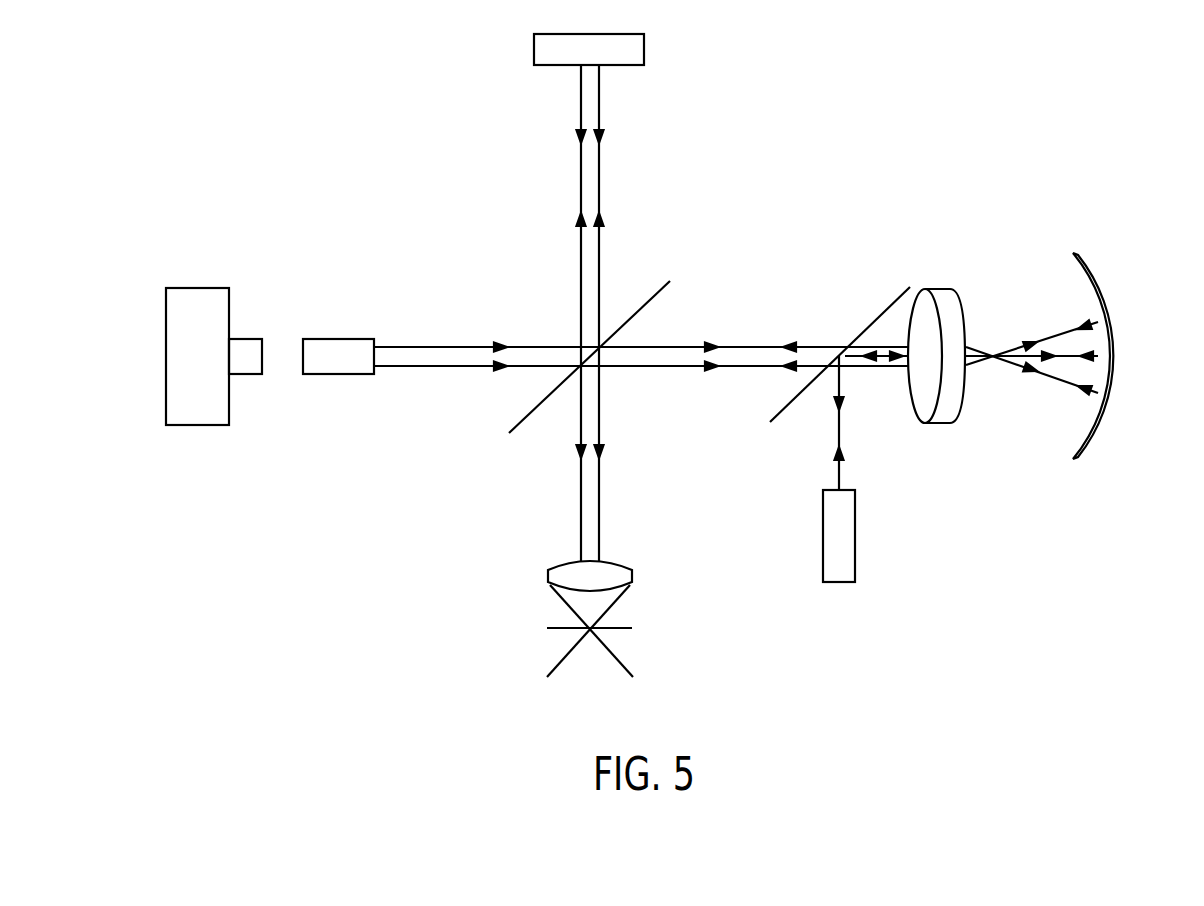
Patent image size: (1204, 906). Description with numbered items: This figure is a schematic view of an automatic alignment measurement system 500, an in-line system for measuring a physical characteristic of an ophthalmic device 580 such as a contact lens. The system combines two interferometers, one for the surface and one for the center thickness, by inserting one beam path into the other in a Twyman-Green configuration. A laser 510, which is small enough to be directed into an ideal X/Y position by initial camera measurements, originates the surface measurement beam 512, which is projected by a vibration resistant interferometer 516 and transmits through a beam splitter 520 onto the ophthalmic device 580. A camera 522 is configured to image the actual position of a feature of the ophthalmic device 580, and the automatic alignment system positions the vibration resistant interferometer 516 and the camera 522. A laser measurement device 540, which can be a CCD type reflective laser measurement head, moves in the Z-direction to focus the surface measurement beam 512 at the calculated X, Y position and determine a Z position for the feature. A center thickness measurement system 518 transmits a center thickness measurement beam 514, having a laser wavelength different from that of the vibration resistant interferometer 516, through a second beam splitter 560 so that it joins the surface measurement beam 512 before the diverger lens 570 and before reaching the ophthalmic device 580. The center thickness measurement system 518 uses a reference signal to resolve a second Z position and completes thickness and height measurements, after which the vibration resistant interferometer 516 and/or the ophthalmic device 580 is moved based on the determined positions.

The measurement system 500 is at (1100, 572).
The laser 510 is at (344, 321).
The surface measurement beam 512 is at (533, 326).
The center thickness measurement beam 514 is at (821, 442).
The vibration resistant interferometer 516 is at (317, 572).
The center thickness measurement system 518 is at (909, 246).
The beam splitter 520 is at (510, 405).
The camera 522 is at (193, 288).
The laser measurement device 540 is at (536, 671).
The second beam splitter 560 is at (849, 323).
The diverger lens 570 is at (981, 405).
The ophthalmic device 580 is at (1110, 262).